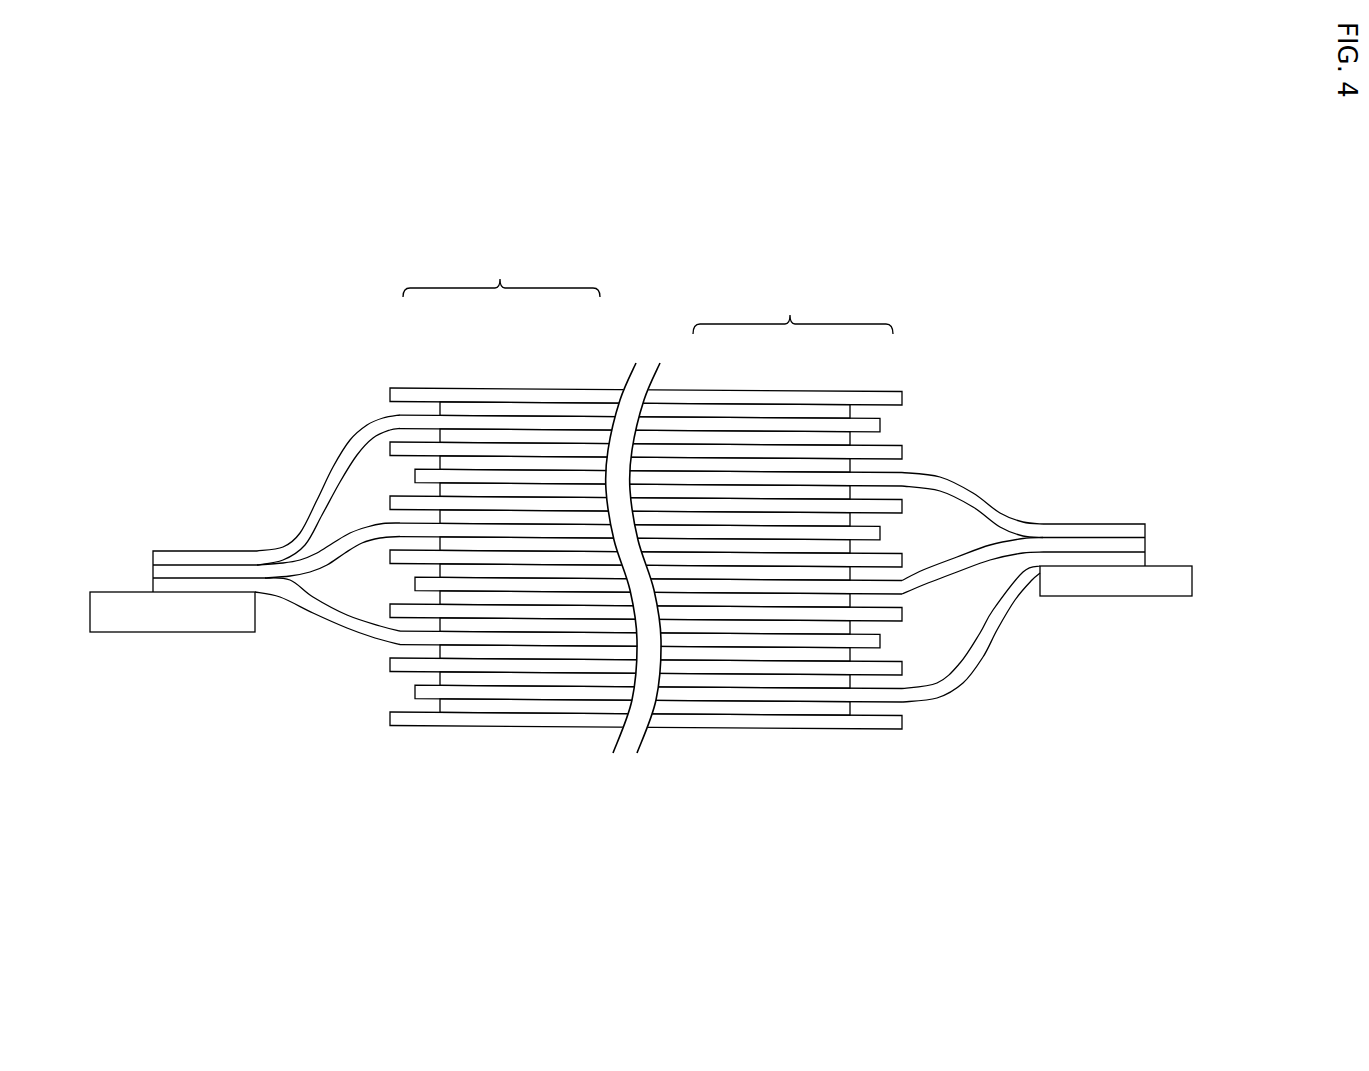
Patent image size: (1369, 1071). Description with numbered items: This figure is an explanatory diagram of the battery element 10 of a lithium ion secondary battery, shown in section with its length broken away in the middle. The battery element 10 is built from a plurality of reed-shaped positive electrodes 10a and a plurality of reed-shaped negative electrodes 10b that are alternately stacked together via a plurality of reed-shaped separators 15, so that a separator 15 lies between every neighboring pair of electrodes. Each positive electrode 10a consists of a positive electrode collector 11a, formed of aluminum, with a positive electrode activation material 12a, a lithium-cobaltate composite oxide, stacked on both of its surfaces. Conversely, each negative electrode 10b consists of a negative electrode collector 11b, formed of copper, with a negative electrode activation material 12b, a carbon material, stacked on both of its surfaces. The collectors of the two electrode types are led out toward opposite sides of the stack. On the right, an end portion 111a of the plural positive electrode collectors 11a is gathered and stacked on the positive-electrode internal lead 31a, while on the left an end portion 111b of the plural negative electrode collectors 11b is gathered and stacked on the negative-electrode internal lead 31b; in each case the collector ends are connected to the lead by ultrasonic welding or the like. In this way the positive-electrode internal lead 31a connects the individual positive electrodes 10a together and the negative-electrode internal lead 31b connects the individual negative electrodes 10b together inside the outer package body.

The battery element 10 is at (242, 287).
The positive electrode 10a is at (793, 308).
The negative electrode 10b is at (501, 271).
The positive electrode collector 11a is at (762, 482).
The negative electrode collector 11b is at (473, 417).
The positive electrode activation material 12a is at (703, 468).
The negative electrode activation material 12b is at (534, 405).
The separator 15 is at (893, 392).
The positive-electrode internal lead 31a is at (1177, 583).
The negative-electrode internal lead 31b is at (118, 613).
The end portion of the positive electrode collectors 111a is at (1117, 521).
The end portion of the negative electrode collectors 111b is at (175, 550).